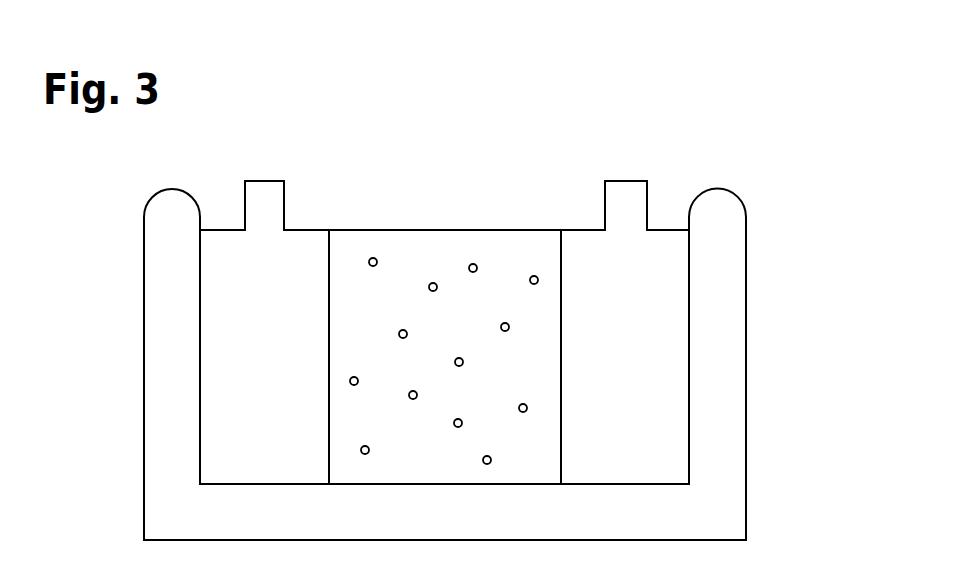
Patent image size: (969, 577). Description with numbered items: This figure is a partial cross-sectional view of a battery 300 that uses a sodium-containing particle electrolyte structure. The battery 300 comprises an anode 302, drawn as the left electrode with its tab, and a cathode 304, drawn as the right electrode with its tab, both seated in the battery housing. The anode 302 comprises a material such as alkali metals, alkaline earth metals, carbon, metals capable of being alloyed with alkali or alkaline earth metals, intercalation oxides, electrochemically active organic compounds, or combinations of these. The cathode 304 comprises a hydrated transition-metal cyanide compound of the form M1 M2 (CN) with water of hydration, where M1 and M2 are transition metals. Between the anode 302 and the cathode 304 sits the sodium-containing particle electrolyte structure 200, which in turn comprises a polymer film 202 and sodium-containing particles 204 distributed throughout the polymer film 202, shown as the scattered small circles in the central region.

The battery 300 is at (617, 123).
The anode 302 is at (230, 174).
The cathode 304 is at (657, 172).
The sodium-containing particle electrolyte structure 200 is at (473, 213).
The polymer film 202 is at (444, 464).
The sodium-containing particles 204 is at (471, 273).